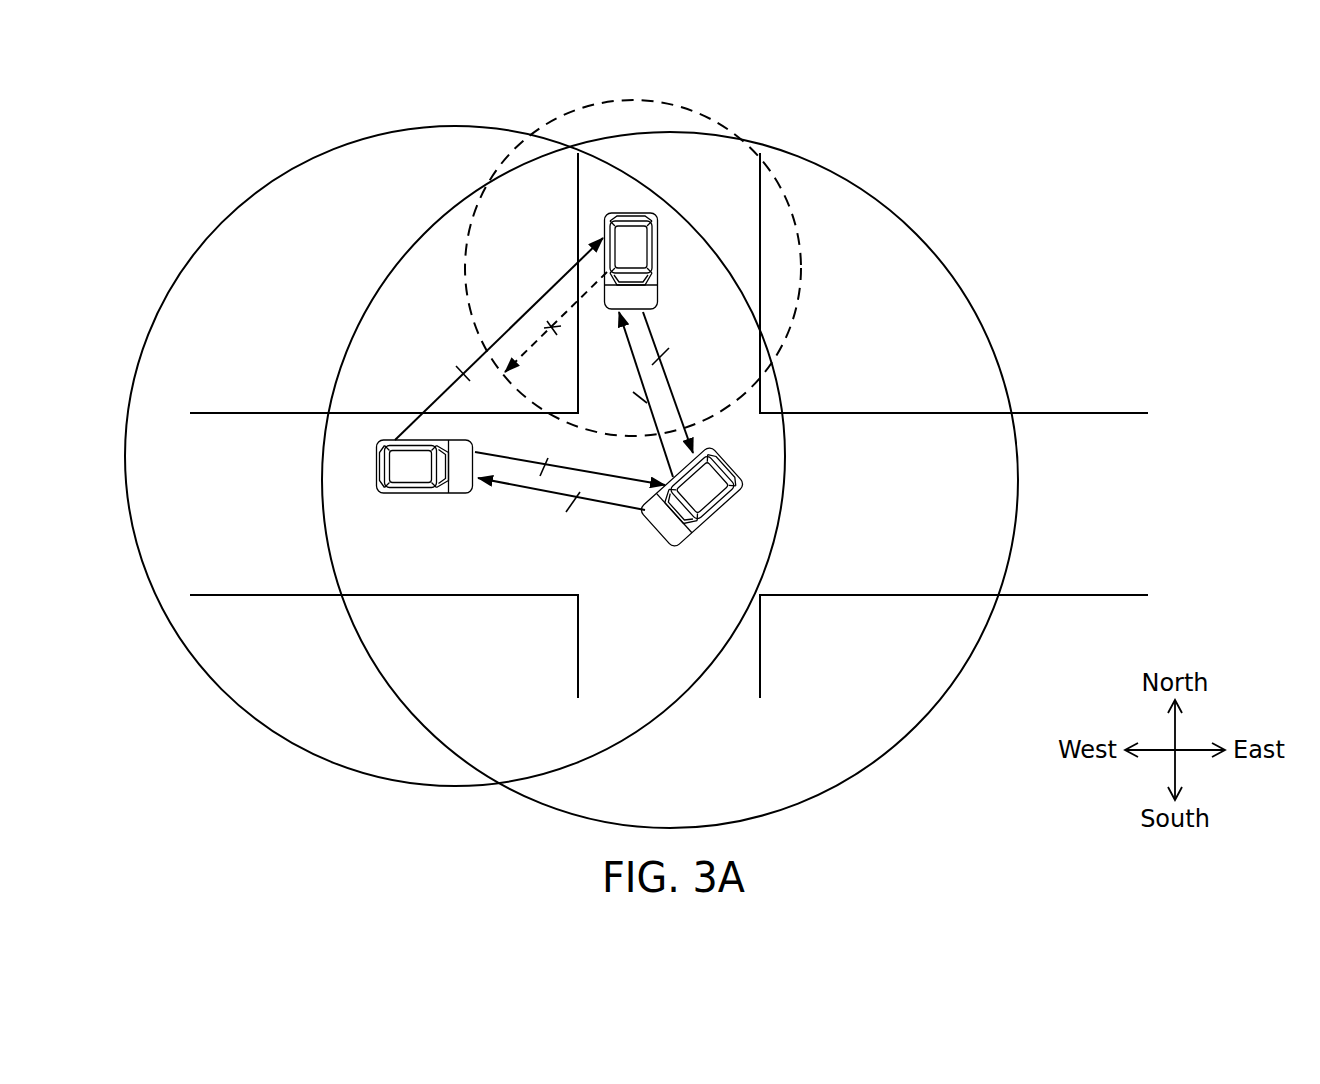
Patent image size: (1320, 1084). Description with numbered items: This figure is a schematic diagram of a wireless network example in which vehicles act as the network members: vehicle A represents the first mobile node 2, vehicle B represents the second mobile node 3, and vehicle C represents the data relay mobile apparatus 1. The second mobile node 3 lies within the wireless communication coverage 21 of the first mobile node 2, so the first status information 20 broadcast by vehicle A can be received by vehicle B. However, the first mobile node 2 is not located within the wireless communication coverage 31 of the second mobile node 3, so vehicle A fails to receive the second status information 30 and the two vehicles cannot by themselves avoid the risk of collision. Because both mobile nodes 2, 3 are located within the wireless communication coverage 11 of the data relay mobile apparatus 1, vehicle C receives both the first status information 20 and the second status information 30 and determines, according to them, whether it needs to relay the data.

The data relay mobile apparatus 1 is at (720, 503).
The first mobile node 2 is at (428, 492).
The second mobile node 3 is at (659, 259).
The wireless communication coverage of the data relay mobile apparatus 11 is at (917, 232).
The wireless communication coverage of the first mobile node 21 is at (237, 208).
The wireless communication coverage of the second mobile node 31 is at (802, 288).
The first status information 20 is at (456, 373).
The second status information 30 is at (665, 355).